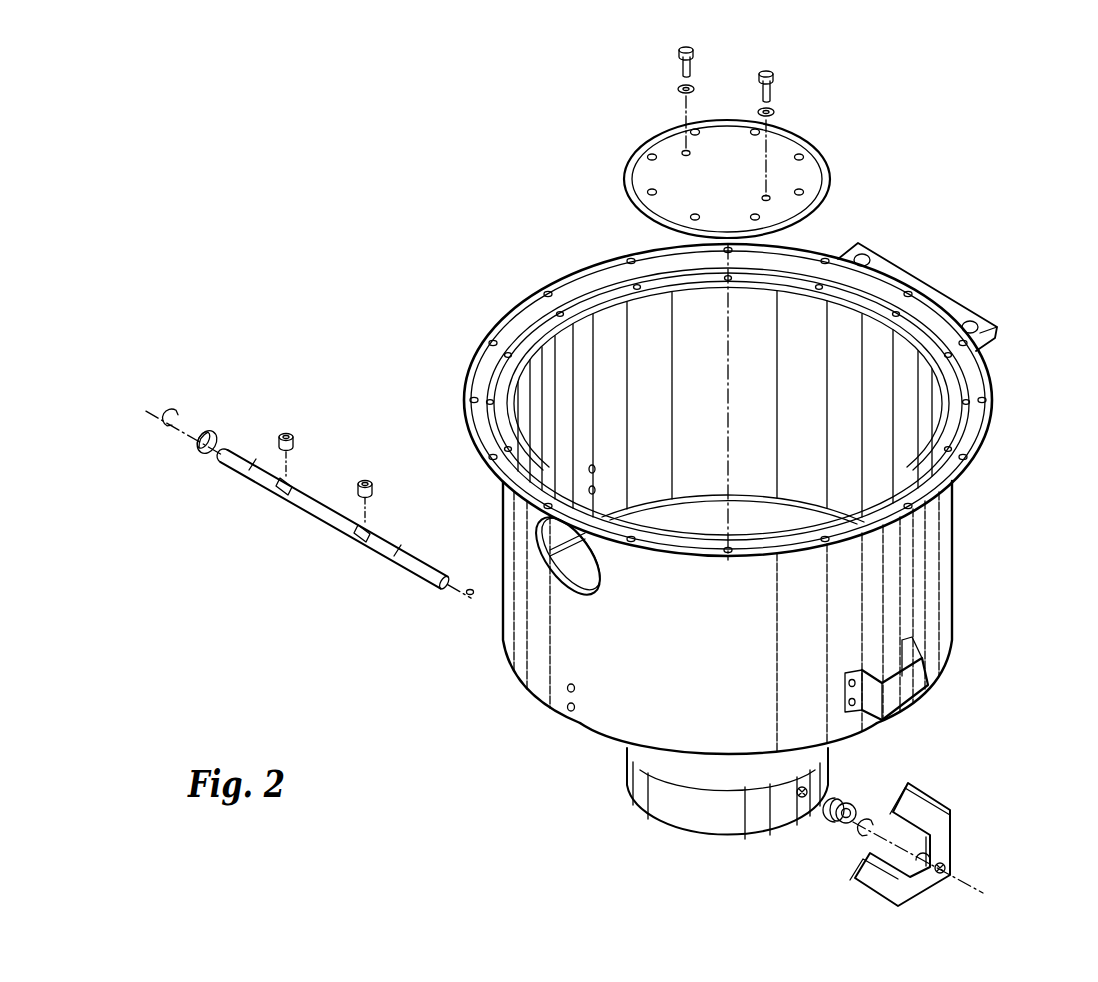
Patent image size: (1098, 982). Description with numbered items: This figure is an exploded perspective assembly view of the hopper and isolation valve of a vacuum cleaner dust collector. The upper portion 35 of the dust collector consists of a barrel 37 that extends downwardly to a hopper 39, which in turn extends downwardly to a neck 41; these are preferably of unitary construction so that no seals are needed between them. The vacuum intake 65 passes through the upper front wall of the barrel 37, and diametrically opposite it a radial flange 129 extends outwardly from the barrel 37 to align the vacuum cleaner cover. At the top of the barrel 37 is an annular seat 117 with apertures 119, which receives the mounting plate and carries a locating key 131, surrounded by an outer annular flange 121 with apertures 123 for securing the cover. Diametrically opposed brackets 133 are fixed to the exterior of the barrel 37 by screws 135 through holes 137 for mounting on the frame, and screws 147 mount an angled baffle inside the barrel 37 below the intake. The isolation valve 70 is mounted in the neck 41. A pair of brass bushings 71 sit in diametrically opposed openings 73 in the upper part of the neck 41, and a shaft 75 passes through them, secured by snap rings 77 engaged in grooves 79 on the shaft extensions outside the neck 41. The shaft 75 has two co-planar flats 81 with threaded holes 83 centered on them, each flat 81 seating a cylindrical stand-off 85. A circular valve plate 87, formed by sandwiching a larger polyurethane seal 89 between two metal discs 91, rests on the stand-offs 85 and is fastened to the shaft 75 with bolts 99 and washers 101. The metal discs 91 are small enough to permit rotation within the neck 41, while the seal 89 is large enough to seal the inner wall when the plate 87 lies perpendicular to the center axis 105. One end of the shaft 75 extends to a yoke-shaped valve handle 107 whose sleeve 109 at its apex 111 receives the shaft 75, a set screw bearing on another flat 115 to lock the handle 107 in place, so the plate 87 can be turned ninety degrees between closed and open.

The upper portion 35 is at (741, 537).
The barrel 37 is at (500, 515).
The hopper 39 is at (613, 747).
The neck 41 is at (683, 788).
The vacuum intake 65 is at (588, 568).
The isolation valve 70 is at (313, 527).
The bushing 71 is at (205, 456).
The opening 73 is at (800, 797).
The shaft 75 is at (330, 508).
The snap ring 77 is at (170, 427).
The groove 79 is at (395, 556).
The flat 81 is at (292, 482).
The threaded hole 83 is at (361, 542).
The cylindrical stand-off 85 is at (370, 482).
The valve plate 87 is at (715, 179).
The polyurethane seal 89 is at (635, 207).
The metal disc 91 is at (800, 170).
The bolt 99 is at (772, 82).
The washer 101 is at (776, 111).
The center axis 105 is at (729, 398).
The valve handle 107 is at (952, 831).
The sleeve 109 is at (937, 850).
The apex 111 is at (950, 873).
The flat 115 is at (469, 590).
The annular seat 117 is at (543, 330).
The aperture 119 is at (730, 281).
The outer annular flange 121 is at (516, 305).
The aperture 123 is at (470, 398).
The flange 129 is at (928, 287).
The locating key 131 is at (892, 318).
The bracket 133 is at (920, 695).
The screw 135 is at (875, 705).
The hole 137 is at (596, 467).
The screw 147 is at (576, 686).